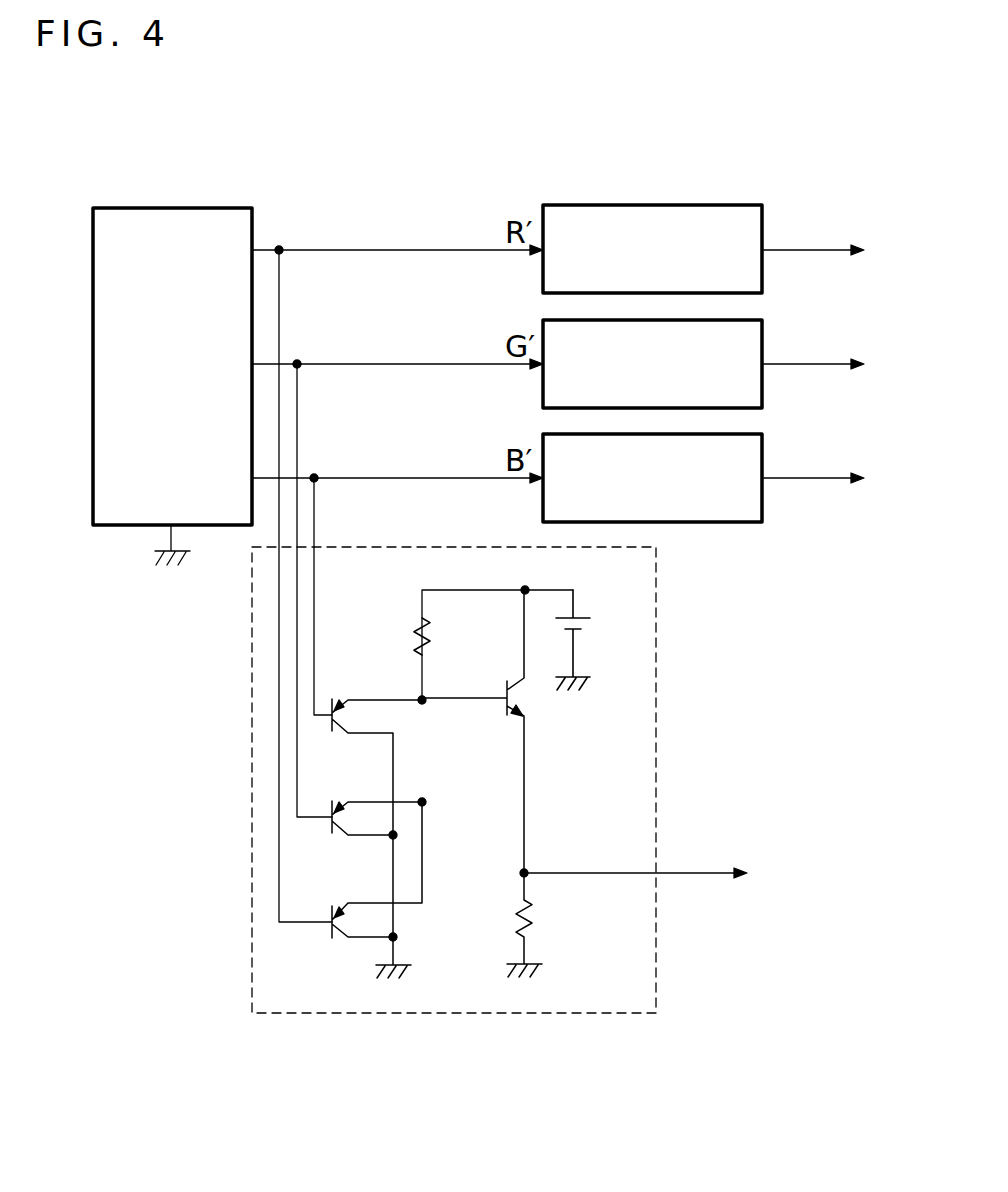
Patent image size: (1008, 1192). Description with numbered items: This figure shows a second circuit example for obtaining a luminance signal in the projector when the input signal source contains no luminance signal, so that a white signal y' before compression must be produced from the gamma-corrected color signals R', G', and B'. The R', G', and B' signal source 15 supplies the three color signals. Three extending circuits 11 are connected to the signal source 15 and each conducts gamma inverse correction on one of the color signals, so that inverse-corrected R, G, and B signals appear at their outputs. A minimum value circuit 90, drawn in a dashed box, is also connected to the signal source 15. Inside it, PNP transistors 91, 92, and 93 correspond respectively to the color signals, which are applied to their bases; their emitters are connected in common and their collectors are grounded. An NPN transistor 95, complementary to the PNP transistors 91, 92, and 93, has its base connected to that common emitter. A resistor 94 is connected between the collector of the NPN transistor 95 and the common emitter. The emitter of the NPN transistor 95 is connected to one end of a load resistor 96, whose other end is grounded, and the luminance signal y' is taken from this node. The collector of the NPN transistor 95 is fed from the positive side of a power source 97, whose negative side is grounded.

The R', G', and B' signal source 15 is at (165, 208).
The extending circuit 11 is at (762, 233).
The minimum value circuit 90 is at (656, 655).
The PNP transistor 91 is at (343, 904).
The PNP transistor 92 is at (343, 802).
The PNP transistor 93 is at (343, 700).
The resistor 94 is at (433, 638).
The NPN transistor 95 is at (527, 705).
The load resistor 96 is at (536, 921).
The power source 97 is at (595, 627).